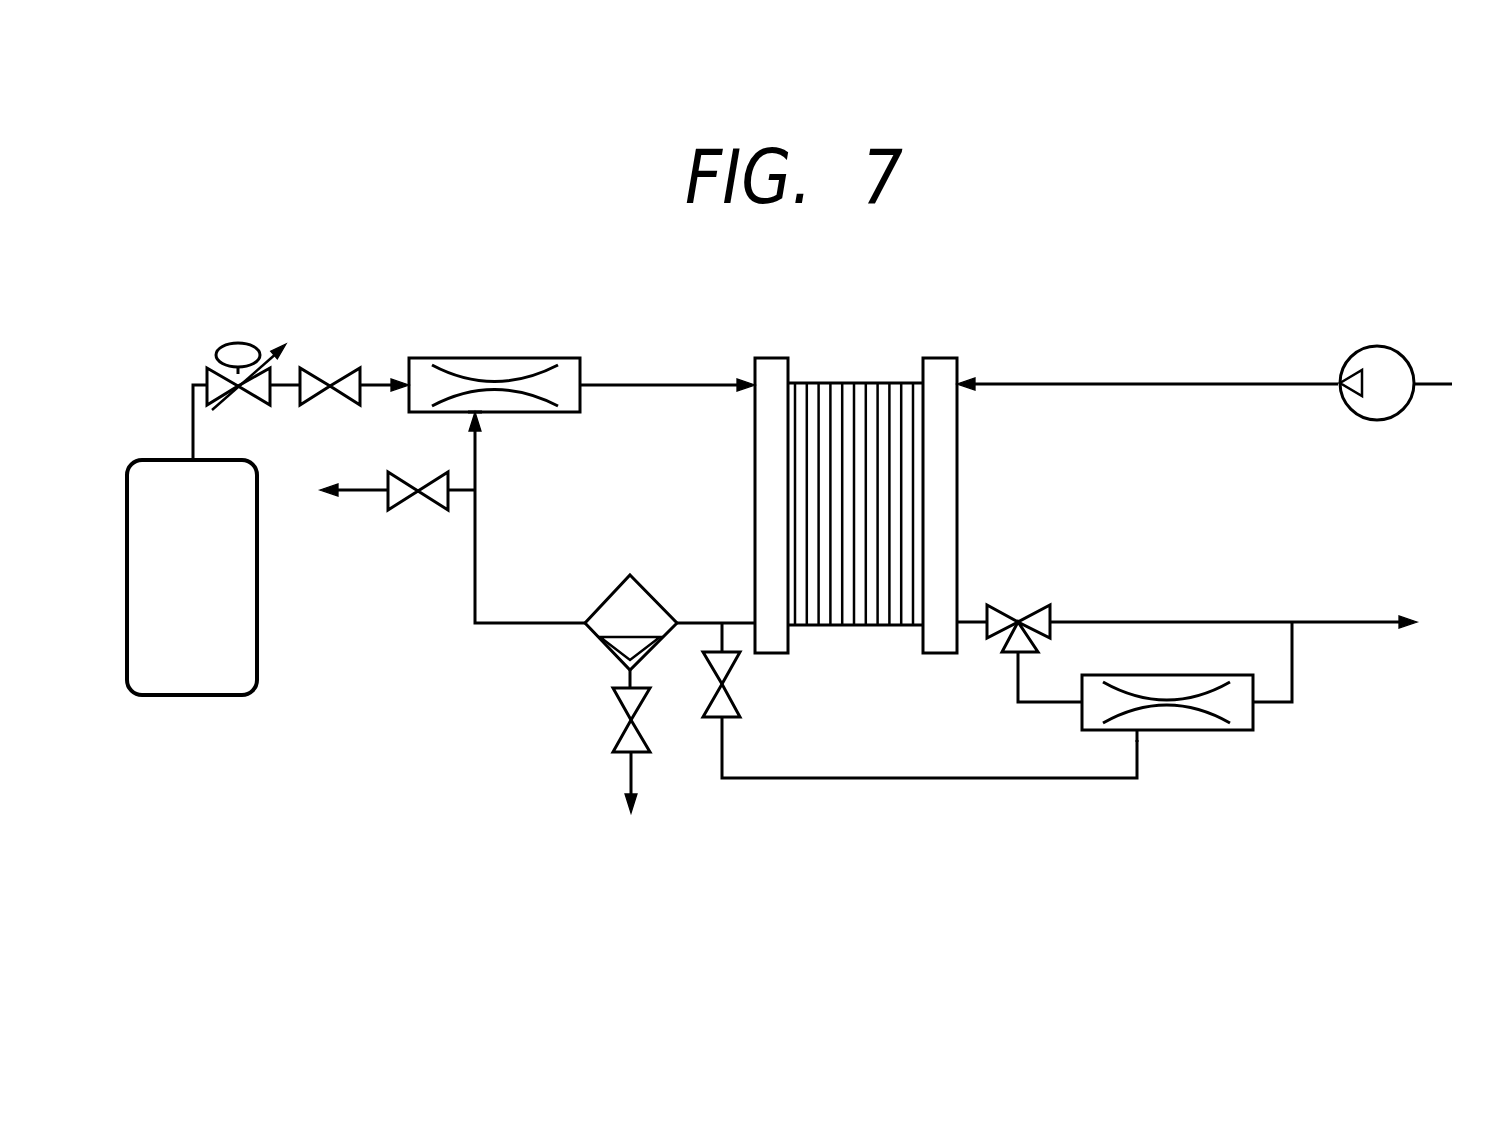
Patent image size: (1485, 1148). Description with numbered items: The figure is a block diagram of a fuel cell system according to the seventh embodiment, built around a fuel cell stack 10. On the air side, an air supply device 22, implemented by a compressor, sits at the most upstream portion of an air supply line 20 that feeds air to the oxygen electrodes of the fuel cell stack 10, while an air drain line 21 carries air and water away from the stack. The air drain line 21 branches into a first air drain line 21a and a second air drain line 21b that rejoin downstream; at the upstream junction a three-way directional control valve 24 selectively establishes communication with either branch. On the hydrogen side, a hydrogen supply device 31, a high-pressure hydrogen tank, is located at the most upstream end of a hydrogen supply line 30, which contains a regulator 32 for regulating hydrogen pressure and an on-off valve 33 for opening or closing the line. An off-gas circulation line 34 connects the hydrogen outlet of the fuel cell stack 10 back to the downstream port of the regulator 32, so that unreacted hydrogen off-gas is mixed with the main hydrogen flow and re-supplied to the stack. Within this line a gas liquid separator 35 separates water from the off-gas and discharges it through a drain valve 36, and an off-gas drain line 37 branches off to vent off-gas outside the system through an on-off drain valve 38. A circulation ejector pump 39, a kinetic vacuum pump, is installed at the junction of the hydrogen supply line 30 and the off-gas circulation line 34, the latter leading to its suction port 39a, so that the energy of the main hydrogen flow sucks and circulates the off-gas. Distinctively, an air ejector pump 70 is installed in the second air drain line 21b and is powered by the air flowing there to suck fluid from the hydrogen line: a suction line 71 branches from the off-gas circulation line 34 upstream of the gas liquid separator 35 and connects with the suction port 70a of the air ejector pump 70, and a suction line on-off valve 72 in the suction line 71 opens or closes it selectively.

The fuel cell stack 10 is at (838, 612).
The air supply line 20 is at (995, 387).
The air drain line 21 is at (1338, 624).
The first air drain line 21a is at (1188, 620).
The second air drain line 21b is at (1035, 703).
The air supply device 22 is at (1377, 420).
The three-way directional control valve 24 is at (1020, 605).
The hydrogen supply line 30 is at (193, 428).
The hydrogen supply device 31 is at (200, 695).
The regulator 32 is at (232, 342).
The on-off valve 33 is at (333, 385).
The off-gas circulation line 34 is at (478, 557).
The gas liquid separator 35 is at (645, 575).
The drain valve 36 is at (618, 722).
The off-gas drain line 37 is at (358, 490).
The on-off drain valve 38 is at (410, 512).
The circulation ejector pump 39 is at (513, 358).
The suction port 39a is at (480, 414).
The air ejector pump 70 is at (1210, 732).
The suction port 70a is at (1150, 732).
The suction line 71 is at (1075, 780).
The suction line on-off valve 72 is at (735, 685).